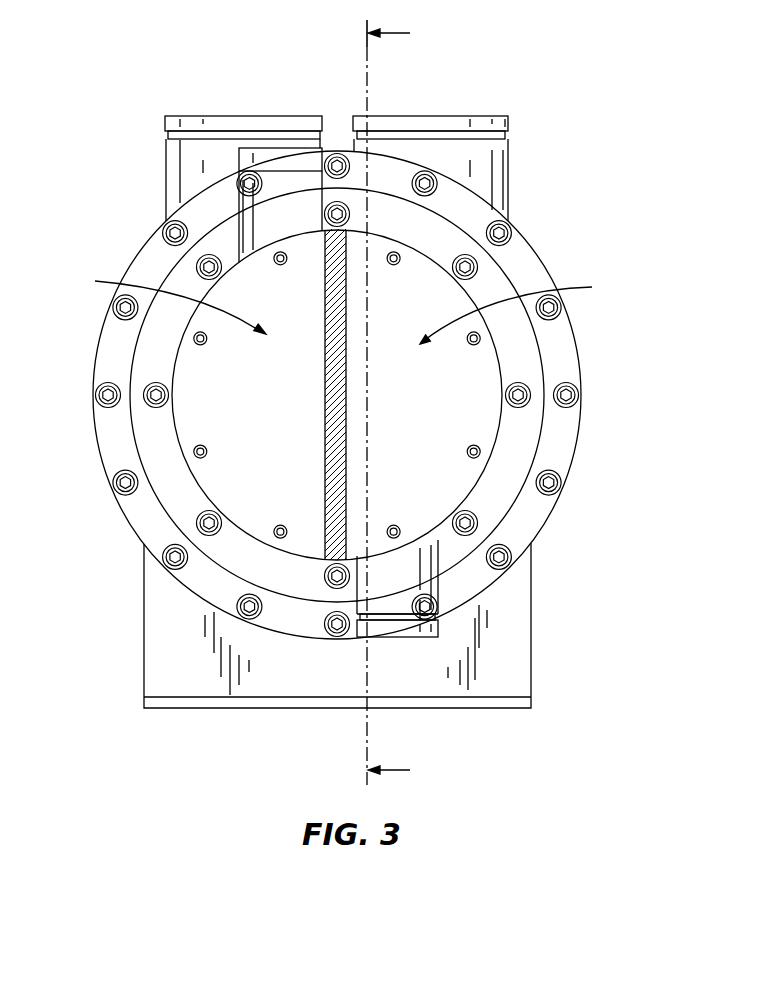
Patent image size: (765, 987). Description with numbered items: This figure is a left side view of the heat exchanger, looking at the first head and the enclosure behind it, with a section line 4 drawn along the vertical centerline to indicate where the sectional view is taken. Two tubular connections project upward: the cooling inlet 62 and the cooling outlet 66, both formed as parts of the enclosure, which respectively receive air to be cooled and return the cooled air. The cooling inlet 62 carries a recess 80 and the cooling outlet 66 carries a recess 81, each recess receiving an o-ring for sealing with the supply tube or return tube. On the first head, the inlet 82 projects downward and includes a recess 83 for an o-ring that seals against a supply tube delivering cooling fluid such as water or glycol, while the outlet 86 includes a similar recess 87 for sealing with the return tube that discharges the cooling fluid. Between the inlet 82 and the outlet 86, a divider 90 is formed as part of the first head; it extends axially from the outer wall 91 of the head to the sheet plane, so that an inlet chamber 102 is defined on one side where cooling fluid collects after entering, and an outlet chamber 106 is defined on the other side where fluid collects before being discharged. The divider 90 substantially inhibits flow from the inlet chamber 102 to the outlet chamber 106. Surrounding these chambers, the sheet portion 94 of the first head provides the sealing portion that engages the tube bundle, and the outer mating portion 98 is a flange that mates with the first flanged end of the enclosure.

The section line 4 is at (399, 402).
The cooling inlet 62 is at (443, 116).
The cooling outlet 66 is at (239, 116).
The recess 80 is at (495, 135).
The recess 81 is at (193, 133).
The inlet 82 is at (410, 569).
The recess 83 is at (407, 618).
The outlet 86 is at (250, 200).
The recess 87 is at (257, 167).
The divider 90 is at (327, 412).
The outer wall 91 is at (440, 440).
The sheet portion 94 is at (490, 288).
The mating portion 98 is at (557, 352).
The inlet chamber 102 is at (529, 308).
The outlet chamber 106 is at (157, 301).